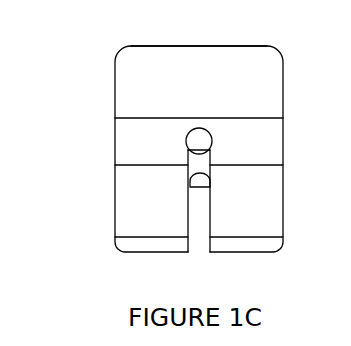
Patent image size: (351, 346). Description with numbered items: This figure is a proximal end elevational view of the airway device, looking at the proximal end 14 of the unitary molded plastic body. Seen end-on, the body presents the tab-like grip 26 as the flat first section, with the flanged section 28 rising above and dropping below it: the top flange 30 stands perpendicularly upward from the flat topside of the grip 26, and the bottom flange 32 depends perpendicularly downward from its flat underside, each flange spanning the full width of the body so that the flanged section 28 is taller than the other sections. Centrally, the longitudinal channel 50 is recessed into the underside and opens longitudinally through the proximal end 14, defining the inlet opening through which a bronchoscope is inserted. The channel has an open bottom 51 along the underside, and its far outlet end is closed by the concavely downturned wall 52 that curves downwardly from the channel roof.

The proximal end 14 is at (271, 147).
The flanged section 28 is at (129, 79).
The top flange 30 is at (162, 68).
The grip 26 is at (131, 135).
The bottom flange 32 is at (273, 223).
The longitudinal channel 50 is at (204, 143).
The open bottom 51 is at (201, 241).
The concavely downturned wall 52 is at (192, 168).